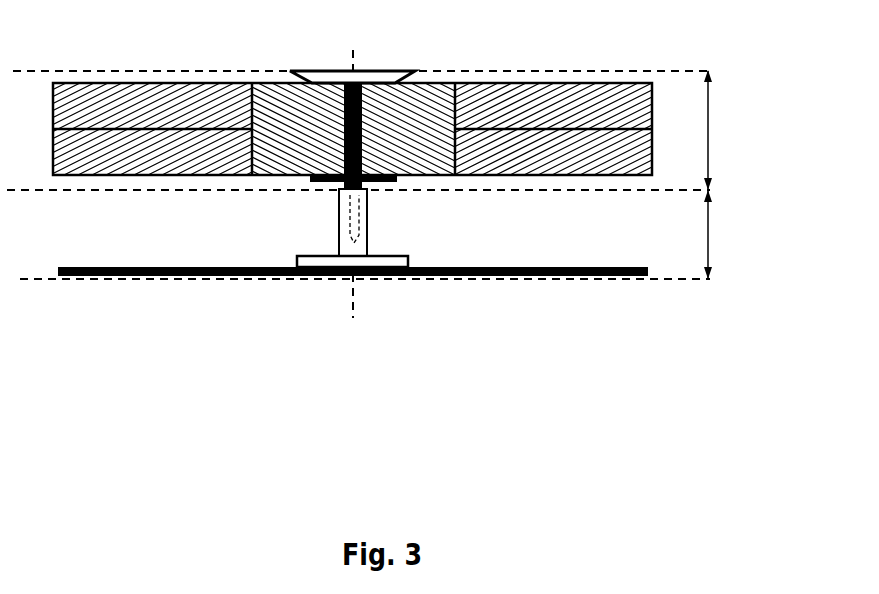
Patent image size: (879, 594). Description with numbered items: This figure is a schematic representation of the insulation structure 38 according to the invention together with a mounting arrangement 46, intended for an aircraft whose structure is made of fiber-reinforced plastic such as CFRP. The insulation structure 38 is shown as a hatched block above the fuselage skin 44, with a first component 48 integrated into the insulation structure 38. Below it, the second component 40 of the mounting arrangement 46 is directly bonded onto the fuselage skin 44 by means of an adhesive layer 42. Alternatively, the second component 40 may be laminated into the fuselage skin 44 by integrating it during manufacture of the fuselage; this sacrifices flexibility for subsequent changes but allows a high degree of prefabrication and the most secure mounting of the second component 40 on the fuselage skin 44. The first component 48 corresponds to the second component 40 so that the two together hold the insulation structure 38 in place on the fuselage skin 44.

The insulation structure 38 is at (677, 161).
The second component 40 is at (345, 242).
The adhesive layer 42 is at (297, 267).
The fuselage skin 44 is at (527, 276).
The mounting arrangement 46 is at (296, 184).
The first component 48 is at (362, 110).